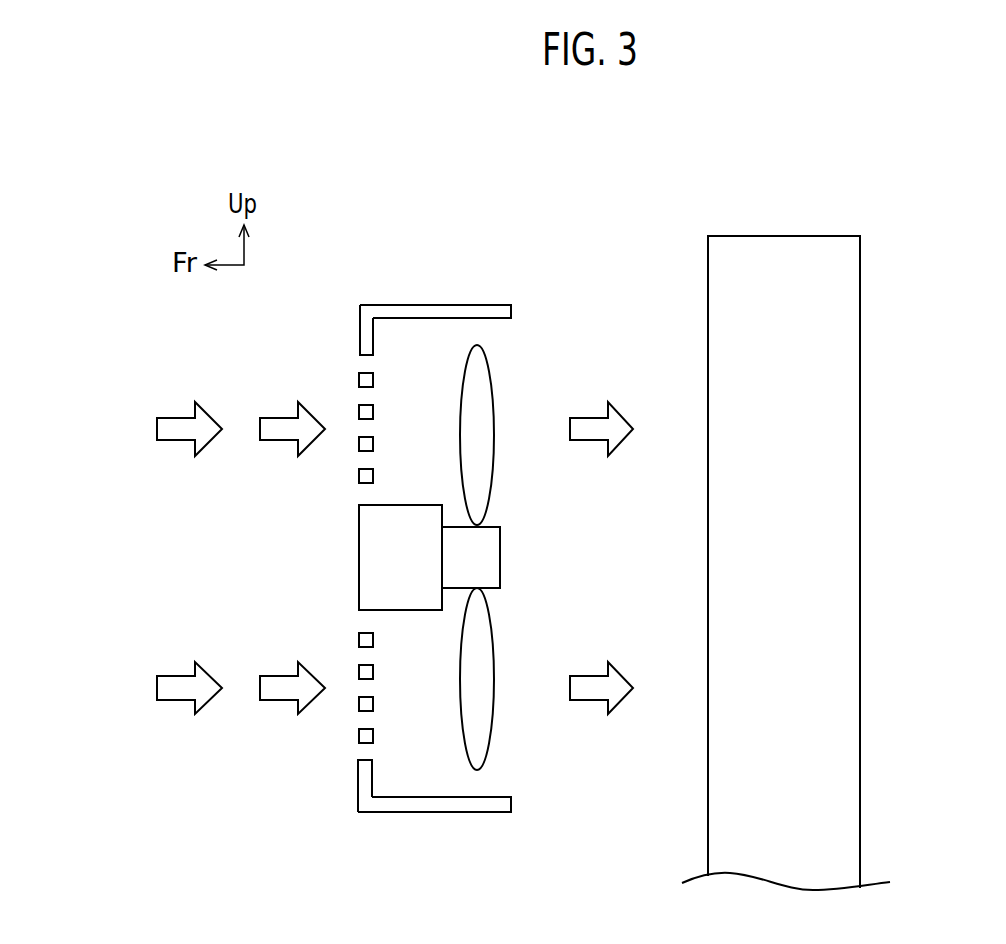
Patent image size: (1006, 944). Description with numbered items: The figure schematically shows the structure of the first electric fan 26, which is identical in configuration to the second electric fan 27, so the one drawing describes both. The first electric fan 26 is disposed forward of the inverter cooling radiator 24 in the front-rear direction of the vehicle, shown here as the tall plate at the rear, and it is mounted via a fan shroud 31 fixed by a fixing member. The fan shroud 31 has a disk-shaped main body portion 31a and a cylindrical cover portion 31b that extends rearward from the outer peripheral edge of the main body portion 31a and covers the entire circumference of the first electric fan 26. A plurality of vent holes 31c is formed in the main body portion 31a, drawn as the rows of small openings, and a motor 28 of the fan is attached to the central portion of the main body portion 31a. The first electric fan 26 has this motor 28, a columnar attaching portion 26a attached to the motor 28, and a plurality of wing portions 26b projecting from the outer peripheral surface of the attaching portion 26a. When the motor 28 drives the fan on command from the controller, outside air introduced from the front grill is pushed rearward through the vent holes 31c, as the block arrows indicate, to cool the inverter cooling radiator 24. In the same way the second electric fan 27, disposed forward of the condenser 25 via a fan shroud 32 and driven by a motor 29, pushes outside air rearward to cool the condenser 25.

The inverter cooling radiator 24 is at (833, 563).
The condenser 25 is at (847, 358).
The first electric fan 26 is at (523, 554).
The second electric fan 27 is at (523, 554).
The attaching portion 26a is at (488, 560).
The wing portions 26b is at (482, 485).
The motor 28 is at (337, 557).
The motor 29 is at (377, 567).
The fan shroud 31 is at (377, 519).
The fan shroud 32 is at (377, 519).
The main body portion 31a is at (362, 345).
The cover portion 31b is at (467, 312).
The vent holes 31c is at (360, 372).